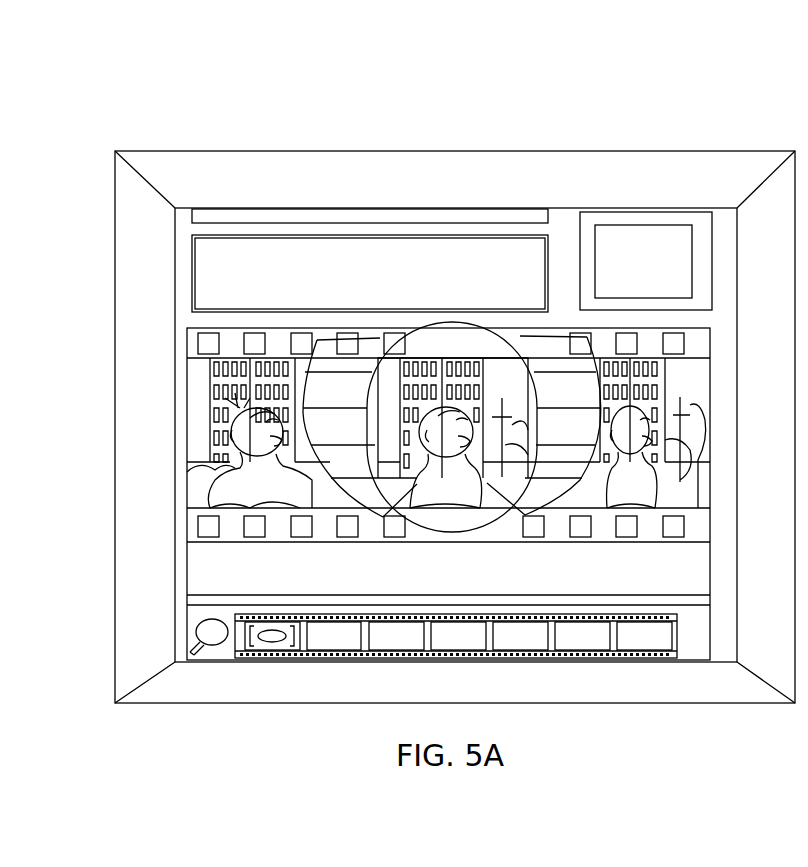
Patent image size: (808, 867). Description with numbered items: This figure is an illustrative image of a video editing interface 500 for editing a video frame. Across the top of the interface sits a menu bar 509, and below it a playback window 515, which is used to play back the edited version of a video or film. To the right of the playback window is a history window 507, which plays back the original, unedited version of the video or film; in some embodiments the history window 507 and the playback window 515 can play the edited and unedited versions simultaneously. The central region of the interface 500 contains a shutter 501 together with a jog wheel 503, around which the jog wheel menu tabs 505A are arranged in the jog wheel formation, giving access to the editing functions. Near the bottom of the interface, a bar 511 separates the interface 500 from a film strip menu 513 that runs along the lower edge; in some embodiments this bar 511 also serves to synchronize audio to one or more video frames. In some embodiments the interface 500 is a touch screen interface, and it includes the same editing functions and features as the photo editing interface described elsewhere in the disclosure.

The video editing interface 500 is at (173, 106).
The shutter 501 is at (490, 323).
The jog wheel 503 is at (365, 337).
The jog wheel menu tabs 505A is at (332, 345).
The history window 507 is at (663, 212).
The menu bar 509 is at (287, 211).
The bar 511 is at (692, 601).
The film strip menu 513 is at (585, 653).
The playback window 515 is at (350, 248).